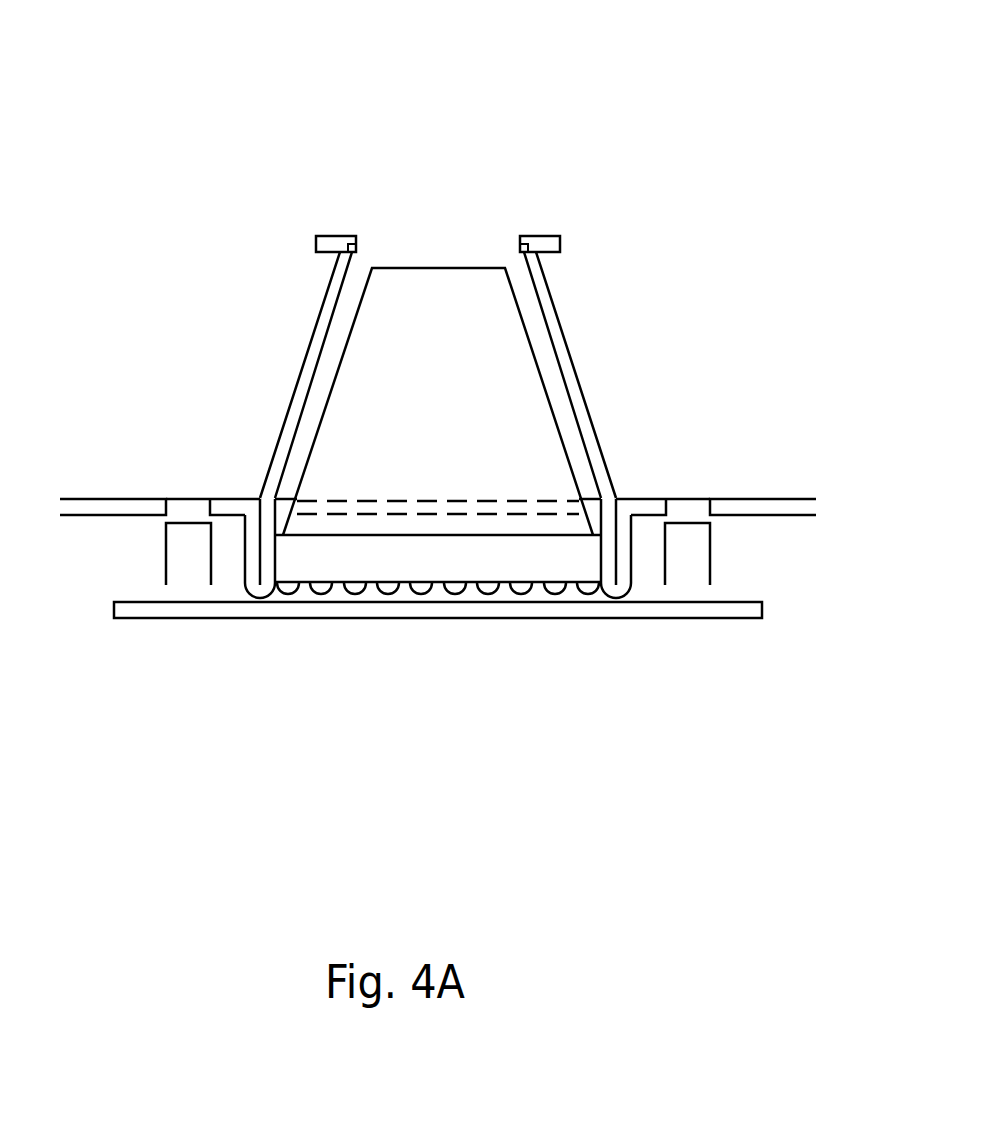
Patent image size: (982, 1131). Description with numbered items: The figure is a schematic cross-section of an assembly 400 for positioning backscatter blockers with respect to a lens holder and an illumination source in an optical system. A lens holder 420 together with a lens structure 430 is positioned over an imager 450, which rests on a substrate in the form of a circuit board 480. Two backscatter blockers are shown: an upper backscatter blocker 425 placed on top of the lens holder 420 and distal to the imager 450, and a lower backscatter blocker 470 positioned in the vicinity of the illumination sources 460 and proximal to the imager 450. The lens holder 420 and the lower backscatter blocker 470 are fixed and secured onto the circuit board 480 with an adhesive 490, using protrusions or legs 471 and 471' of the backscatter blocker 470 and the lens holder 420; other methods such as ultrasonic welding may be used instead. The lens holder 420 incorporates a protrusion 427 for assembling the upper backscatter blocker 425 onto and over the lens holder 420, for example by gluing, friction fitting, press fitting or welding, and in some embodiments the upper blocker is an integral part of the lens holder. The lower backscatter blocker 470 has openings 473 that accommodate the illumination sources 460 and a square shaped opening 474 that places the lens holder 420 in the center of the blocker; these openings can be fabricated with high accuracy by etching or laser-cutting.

The assembly 400 is at (68, 23).
The lens holder 420 is at (558, 317).
The upper backscatter blocker 425 is at (317, 237).
The protrusion 427 is at (355, 252).
The lens structure 430 is at (438, 265).
The imager 450 is at (462, 563).
The illumination source 460 is at (166, 546).
The lower backscatter blocker 470 is at (120, 498).
The leg 471 is at (438, 488).
The leg 471' is at (437, 500).
The openings 473 is at (183, 498).
The square shaped opening 474 is at (435, 507).
The circuit board 480 is at (583, 607).
The adhesive 490 is at (255, 600).